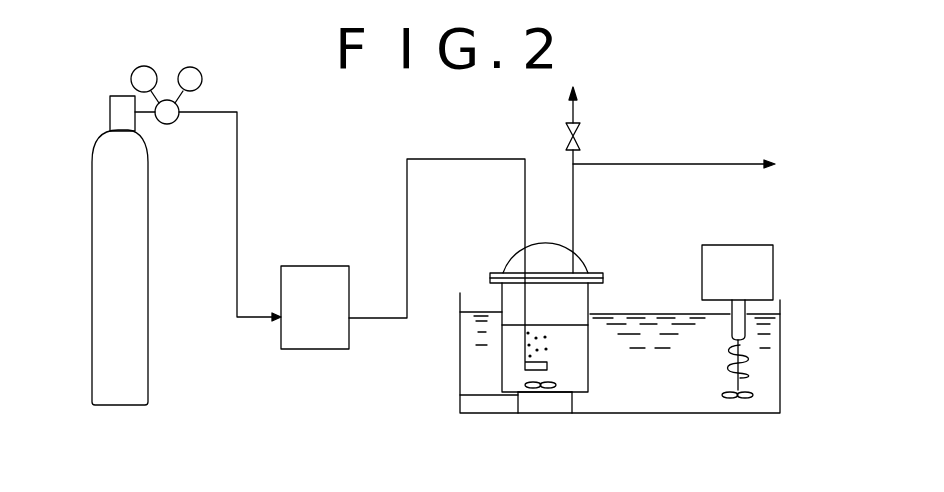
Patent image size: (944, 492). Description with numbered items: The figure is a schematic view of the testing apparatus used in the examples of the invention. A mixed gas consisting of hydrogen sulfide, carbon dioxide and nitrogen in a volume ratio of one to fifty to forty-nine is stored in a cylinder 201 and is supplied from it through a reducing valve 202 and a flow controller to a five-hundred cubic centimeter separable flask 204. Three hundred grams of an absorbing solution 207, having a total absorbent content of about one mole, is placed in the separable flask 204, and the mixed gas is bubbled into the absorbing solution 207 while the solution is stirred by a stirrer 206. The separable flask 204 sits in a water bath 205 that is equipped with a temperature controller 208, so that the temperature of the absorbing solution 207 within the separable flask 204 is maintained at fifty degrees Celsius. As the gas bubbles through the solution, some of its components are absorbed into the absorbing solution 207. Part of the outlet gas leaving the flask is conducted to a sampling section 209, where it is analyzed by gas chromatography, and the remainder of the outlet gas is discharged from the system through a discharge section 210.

The cylinder 201 is at (113, 397).
The reducing valve 202 is at (194, 79).
The separable flask 204 is at (458, 397).
The water bath 205 is at (703, 390).
The stirrer 206 is at (537, 387).
The absorbing solution 207 is at (577, 370).
The temperature controller 208 is at (752, 252).
The sampling section 209 is at (573, 110).
The discharge section 210 is at (710, 164).